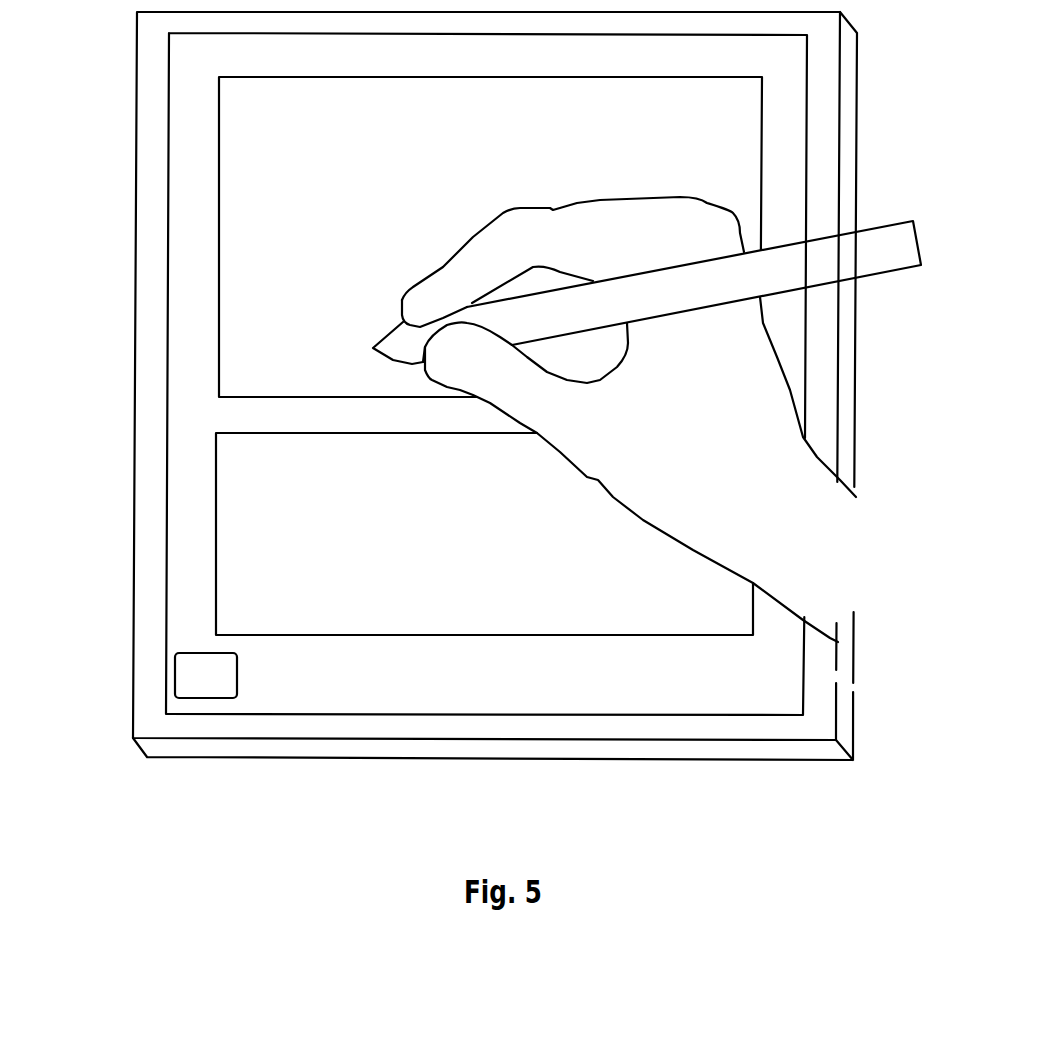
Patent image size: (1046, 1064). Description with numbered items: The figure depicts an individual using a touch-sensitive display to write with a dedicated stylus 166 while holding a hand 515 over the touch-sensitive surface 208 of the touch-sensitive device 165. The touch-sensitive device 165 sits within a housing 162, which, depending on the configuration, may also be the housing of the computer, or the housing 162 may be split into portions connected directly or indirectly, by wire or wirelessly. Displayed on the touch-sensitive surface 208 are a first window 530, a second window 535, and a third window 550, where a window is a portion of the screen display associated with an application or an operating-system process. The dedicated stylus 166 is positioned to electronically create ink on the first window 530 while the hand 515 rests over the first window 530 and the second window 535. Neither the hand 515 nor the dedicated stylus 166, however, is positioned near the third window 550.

The housing 162 is at (277, 743).
The touch-sensitive device 165 is at (137, 272).
The stylus 166 is at (862, 230).
The touch-sensitive surface 208 is at (168, 426).
The hand 515 is at (613, 497).
The first window 530 is at (219, 126).
The second window 535 is at (216, 530).
The third window 550 is at (177, 677).